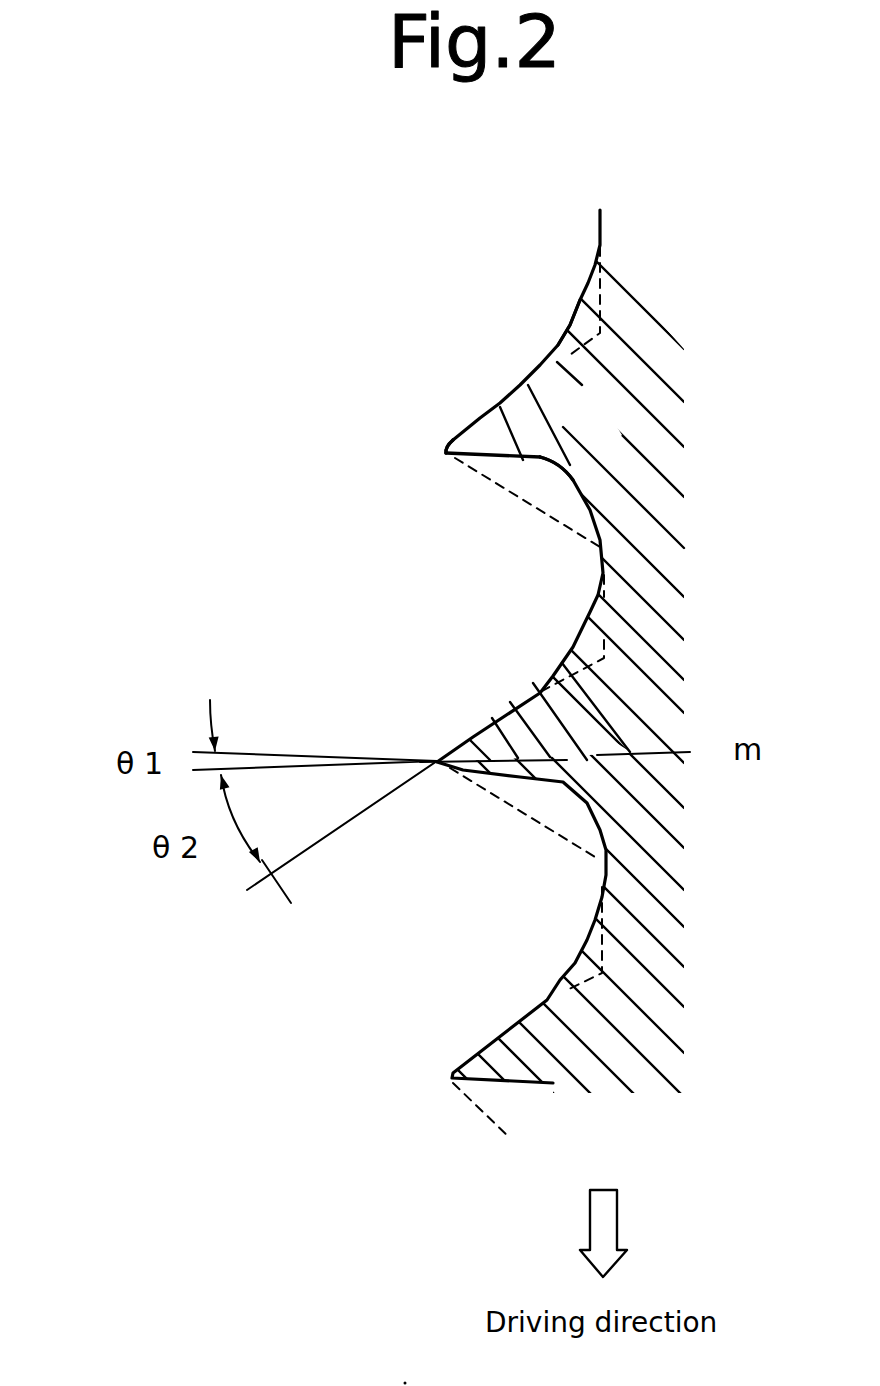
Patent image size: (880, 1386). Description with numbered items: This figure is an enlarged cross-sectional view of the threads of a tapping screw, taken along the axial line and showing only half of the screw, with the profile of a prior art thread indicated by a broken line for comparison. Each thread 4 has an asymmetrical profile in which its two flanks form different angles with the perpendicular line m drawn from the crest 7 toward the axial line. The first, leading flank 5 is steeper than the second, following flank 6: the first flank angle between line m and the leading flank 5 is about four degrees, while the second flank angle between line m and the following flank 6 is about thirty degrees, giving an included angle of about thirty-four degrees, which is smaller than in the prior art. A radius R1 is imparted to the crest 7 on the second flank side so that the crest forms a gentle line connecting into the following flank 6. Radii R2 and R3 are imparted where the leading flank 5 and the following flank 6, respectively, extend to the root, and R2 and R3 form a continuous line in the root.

The thread 4 is at (450, 438).
The leading flank 5 is at (503, 455).
The following flank 6 is at (493, 407).
The crest of the thread 7 is at (448, 453).
The radius of curvature at the crest R1 is at (453, 440).
The radius on the first flank side at the root R2 is at (571, 481).
The radius on the second flank side at the root R3 is at (573, 328).